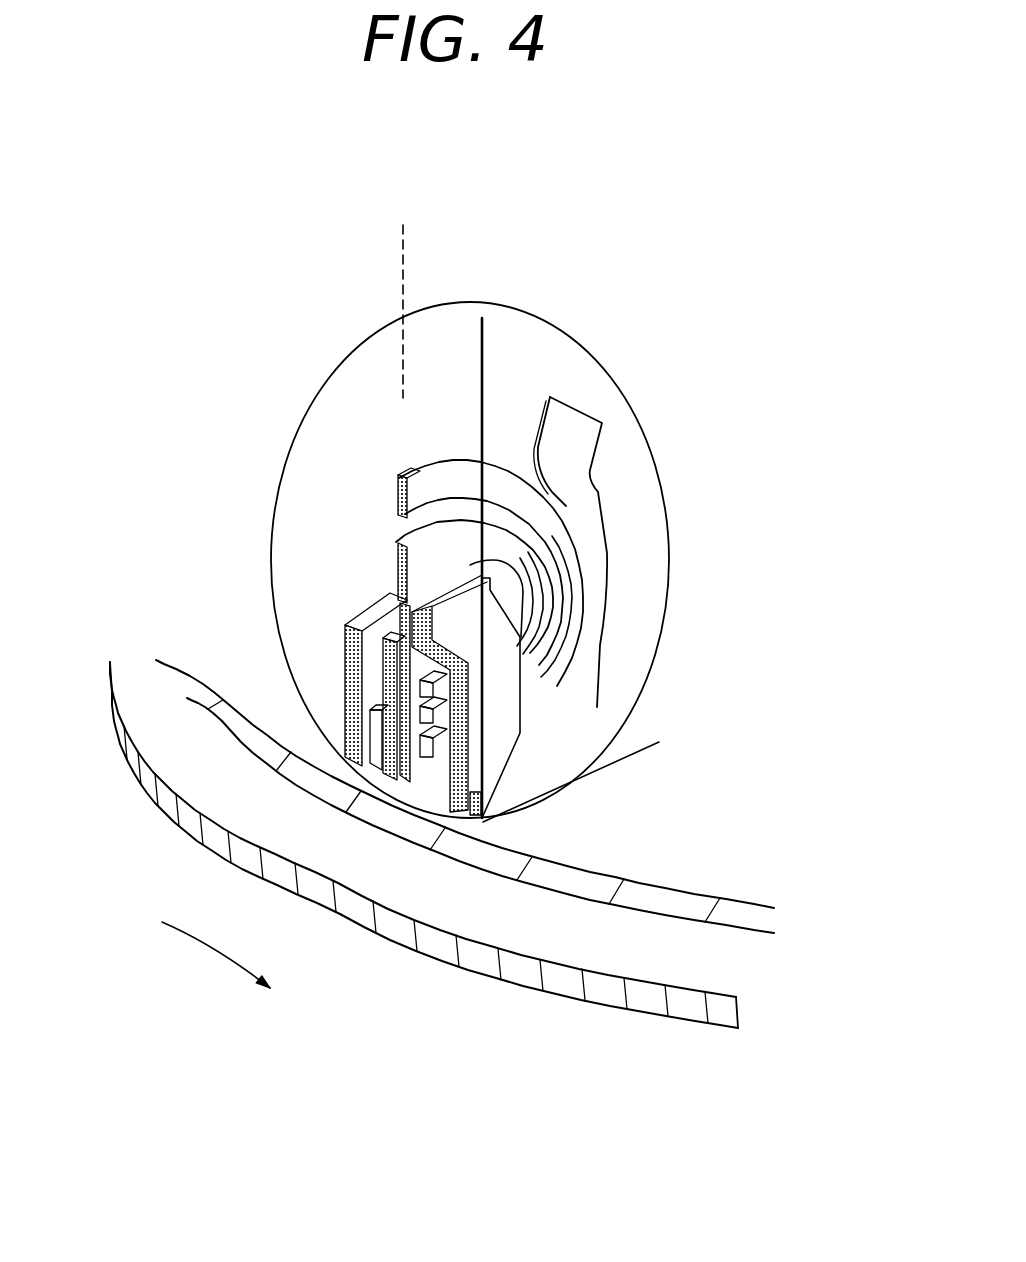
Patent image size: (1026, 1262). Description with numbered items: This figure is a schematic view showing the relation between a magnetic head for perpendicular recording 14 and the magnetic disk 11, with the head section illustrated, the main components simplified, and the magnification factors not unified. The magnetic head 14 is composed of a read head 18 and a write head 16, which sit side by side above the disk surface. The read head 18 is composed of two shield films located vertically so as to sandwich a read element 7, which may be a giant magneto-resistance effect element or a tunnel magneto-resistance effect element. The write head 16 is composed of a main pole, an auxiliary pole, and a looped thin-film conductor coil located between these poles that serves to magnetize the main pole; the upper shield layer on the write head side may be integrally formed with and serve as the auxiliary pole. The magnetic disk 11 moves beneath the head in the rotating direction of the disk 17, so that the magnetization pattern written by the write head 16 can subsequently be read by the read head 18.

The read element 7 is at (350, 752).
The magnetic disk 11 is at (535, 932).
The magnetic head for perpendicular recording 14 is at (637, 421).
The write head 16 is at (497, 283).
The rotating direction of the disk 17 is at (257, 988).
The read head 18 is at (390, 238).